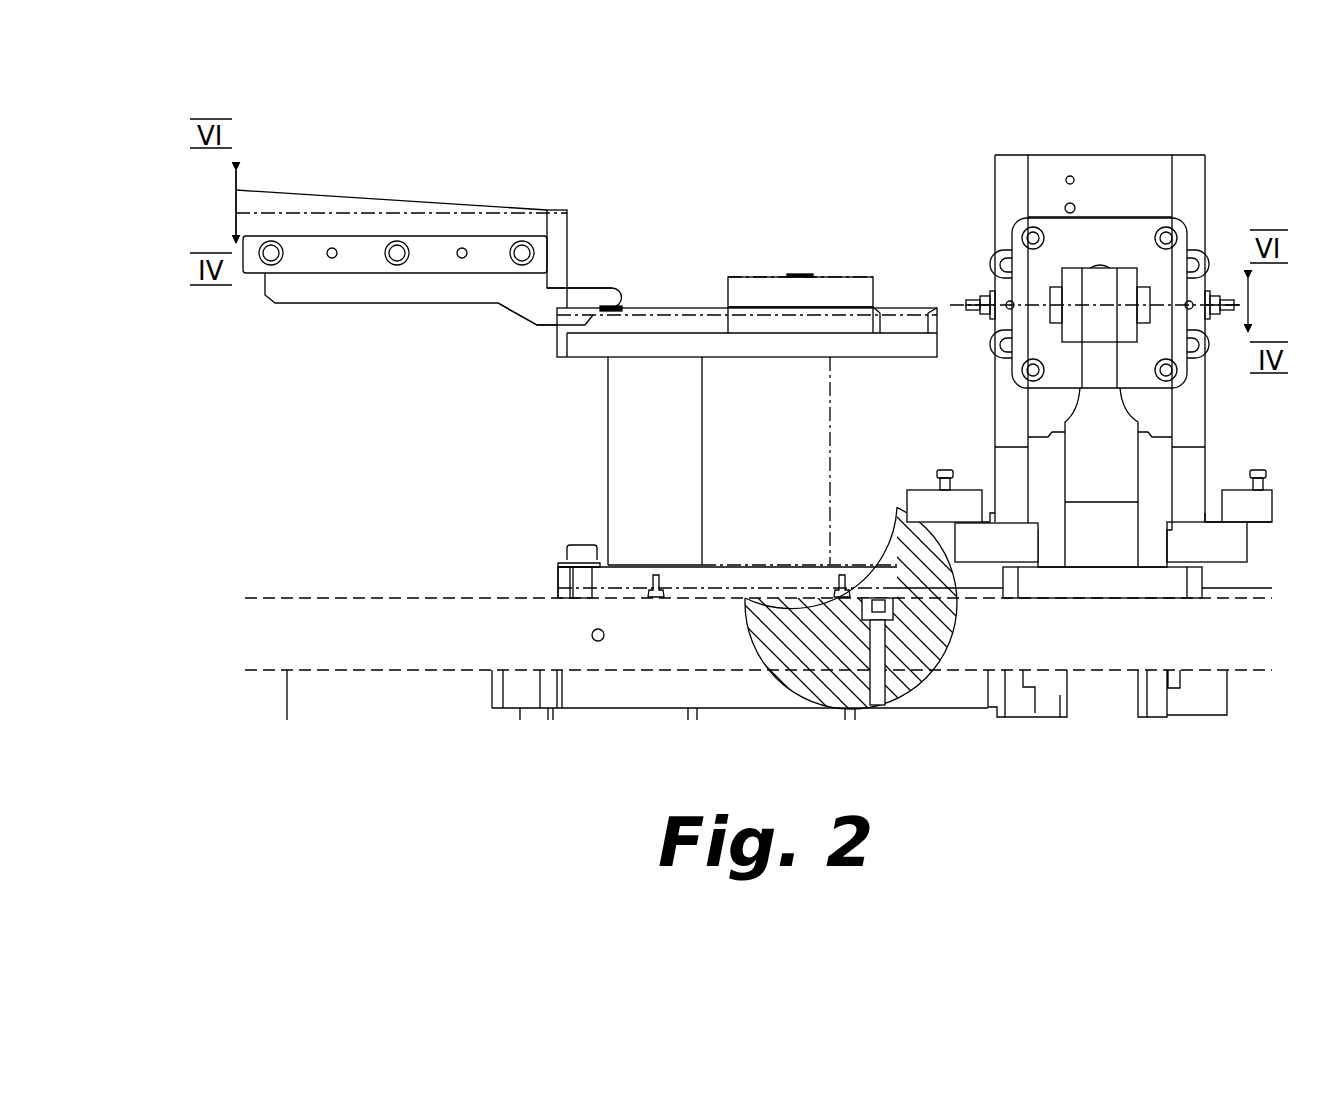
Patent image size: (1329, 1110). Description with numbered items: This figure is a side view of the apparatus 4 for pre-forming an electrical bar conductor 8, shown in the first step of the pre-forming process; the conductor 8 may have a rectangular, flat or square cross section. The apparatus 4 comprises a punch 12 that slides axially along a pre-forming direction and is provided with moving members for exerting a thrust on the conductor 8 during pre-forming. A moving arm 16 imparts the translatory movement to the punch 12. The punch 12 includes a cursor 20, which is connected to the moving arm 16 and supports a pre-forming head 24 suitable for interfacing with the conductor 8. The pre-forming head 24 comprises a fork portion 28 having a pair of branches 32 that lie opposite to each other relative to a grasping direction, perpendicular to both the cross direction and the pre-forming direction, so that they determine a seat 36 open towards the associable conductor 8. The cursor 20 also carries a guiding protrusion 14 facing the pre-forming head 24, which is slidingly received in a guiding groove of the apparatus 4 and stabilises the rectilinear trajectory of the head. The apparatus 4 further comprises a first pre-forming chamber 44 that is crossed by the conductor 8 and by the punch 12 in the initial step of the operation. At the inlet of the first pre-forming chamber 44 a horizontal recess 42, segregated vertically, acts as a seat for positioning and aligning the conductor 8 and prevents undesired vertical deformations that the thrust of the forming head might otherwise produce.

The apparatus 4 is at (660, 148).
The electrical bar conductor 8 is at (768, 305).
The punch 12 is at (433, 318).
The guiding protrusion 14 is at (530, 312).
The moving arm 16 is at (247, 285).
The cursor 20 is at (315, 293).
The pre-forming head 24 is at (580, 297).
The fork portion 28 is at (618, 280).
The branches 32 is at (607, 293).
The seat 36 is at (628, 298).
The horizontal recess 42 is at (752, 318).
The first pre-forming chamber 44 is at (842, 273).